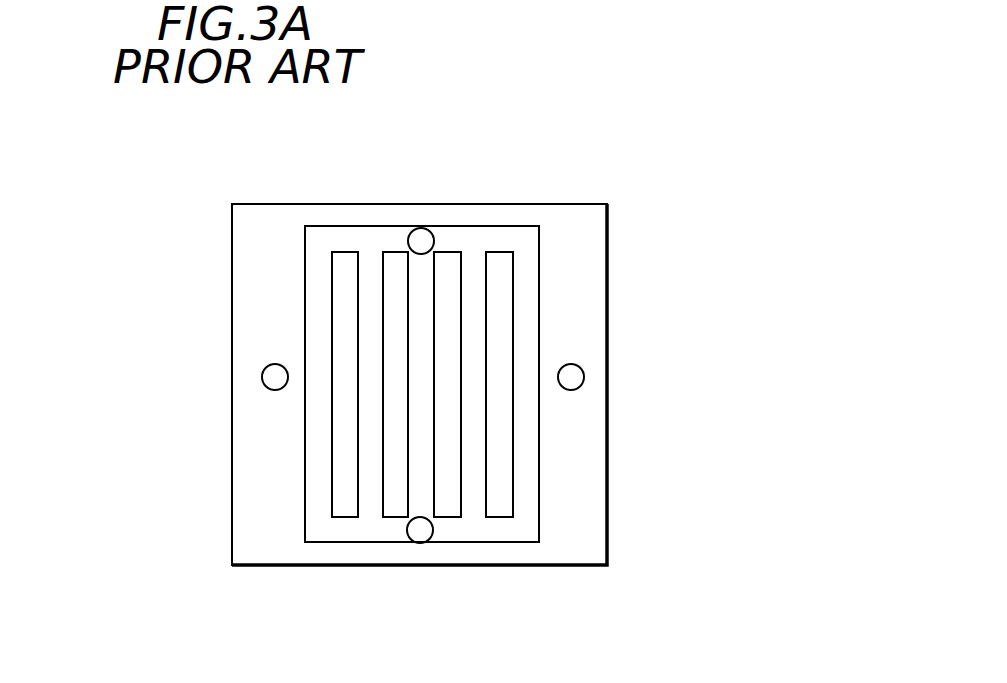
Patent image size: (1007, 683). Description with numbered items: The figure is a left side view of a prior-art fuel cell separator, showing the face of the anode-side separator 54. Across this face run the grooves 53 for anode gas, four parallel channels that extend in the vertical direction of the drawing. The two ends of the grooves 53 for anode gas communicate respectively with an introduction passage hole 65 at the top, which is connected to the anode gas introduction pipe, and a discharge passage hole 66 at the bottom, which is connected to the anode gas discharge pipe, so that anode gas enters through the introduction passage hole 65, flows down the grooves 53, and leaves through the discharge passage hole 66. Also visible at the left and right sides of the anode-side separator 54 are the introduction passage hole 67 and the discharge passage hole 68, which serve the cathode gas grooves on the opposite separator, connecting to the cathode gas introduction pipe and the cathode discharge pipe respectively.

The grooves for anode gas 53 is at (529, 287).
The anode-side separator 54 is at (560, 566).
The introduction passage hole 65 is at (415, 229).
The discharge passage hole 66 is at (426, 543).
The introduction passage hole 67 is at (262, 378).
The discharge passage hole 68 is at (584, 375).